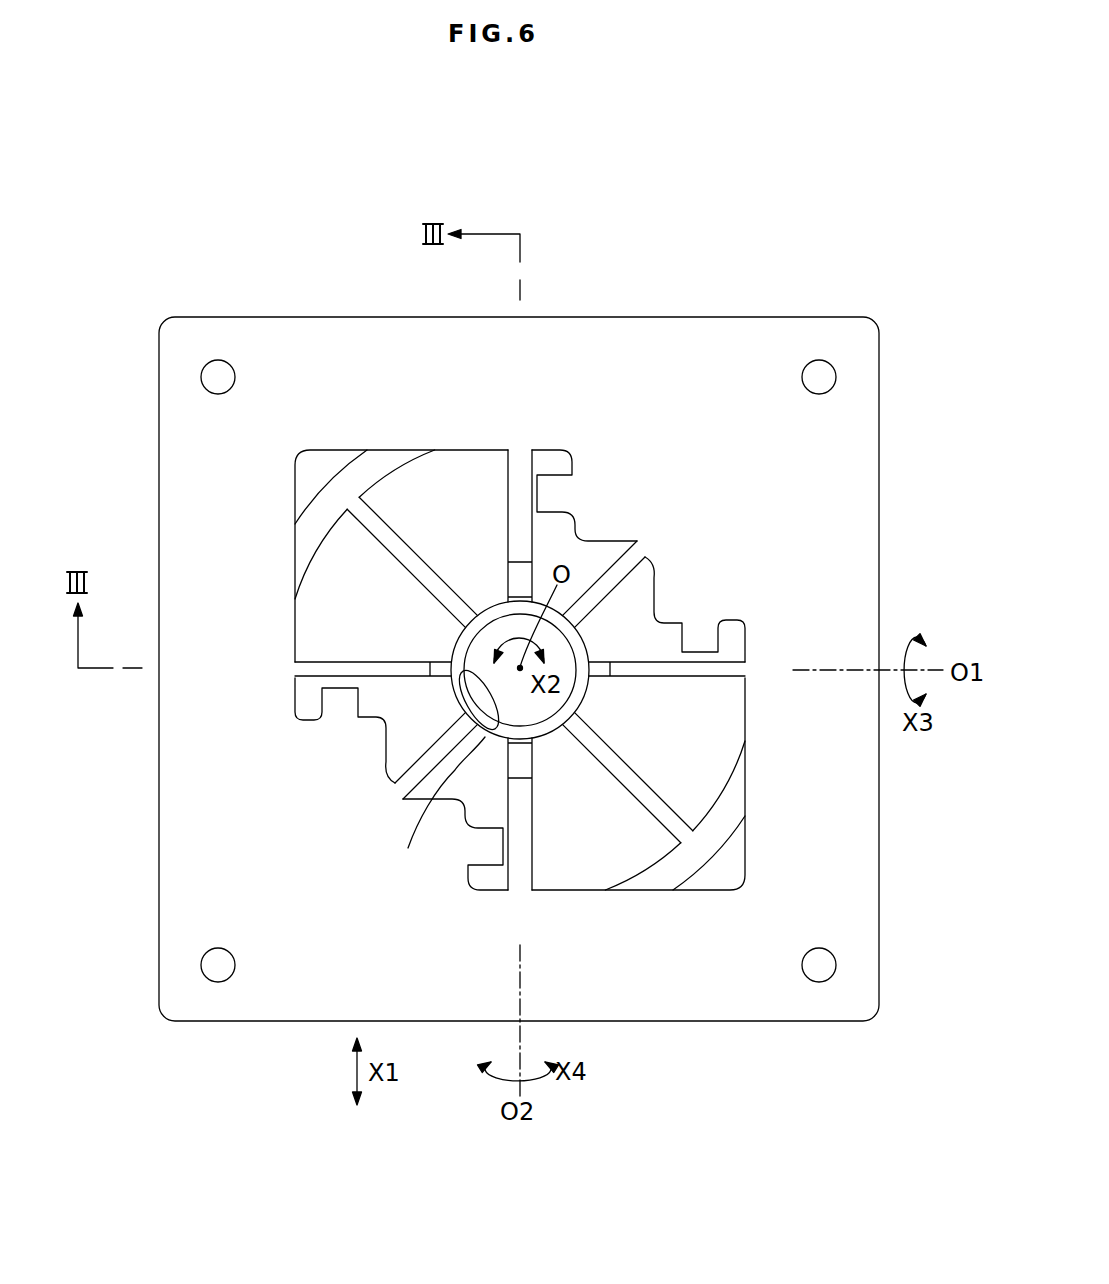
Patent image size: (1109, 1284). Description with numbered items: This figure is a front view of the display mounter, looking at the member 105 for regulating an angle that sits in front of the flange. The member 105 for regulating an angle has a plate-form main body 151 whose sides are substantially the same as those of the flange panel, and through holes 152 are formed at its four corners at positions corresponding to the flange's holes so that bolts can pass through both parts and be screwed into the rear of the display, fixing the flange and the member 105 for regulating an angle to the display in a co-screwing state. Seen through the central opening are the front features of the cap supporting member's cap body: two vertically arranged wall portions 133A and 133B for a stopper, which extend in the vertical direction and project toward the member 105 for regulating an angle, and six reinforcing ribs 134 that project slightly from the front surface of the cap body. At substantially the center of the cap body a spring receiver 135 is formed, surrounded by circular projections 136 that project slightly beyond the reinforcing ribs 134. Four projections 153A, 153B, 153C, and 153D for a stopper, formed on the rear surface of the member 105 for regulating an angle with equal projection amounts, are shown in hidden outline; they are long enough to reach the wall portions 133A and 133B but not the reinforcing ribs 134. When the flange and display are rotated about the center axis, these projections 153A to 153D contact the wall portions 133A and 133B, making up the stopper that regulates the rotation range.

The member for regulating an angle 105 is at (700, 279).
The plate-form main body 151 is at (607, 362).
The through holes 152 is at (218, 360).
The wall portion for a stopper 133A is at (512, 494).
The wall portion for a stopper 133B is at (520, 845).
The reinforcing ribs 134 is at (438, 738).
The spring receiver 135 is at (446, 773).
The projections 136 is at (542, 723).
The projection for a stopper 153A is at (357, 689).
The projection for a stopper 153B is at (490, 840).
The projection for a stopper 153C is at (700, 649).
The projection for a stopper 153D is at (543, 500).